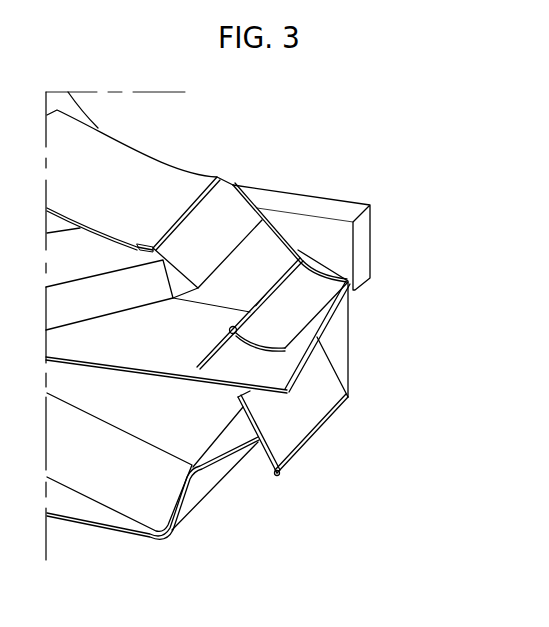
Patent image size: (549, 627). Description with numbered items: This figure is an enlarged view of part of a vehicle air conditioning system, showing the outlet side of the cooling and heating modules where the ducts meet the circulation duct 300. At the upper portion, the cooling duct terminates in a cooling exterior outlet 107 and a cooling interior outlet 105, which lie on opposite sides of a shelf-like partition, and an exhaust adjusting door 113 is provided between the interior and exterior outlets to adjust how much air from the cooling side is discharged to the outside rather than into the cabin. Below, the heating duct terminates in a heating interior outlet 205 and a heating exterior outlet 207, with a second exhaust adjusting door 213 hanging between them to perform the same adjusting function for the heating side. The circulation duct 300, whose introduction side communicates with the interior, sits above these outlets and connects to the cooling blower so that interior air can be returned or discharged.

The circulation duct 300 is at (263, 193).
The cooling exterior outlet 107 is at (275, 253).
The exhaust adjusting door 113 is at (267, 293).
The cooling interior outlet 105 is at (322, 322).
The heating interior outlet 205 is at (337, 355).
The exhaust adjusting door 213 is at (312, 413).
The heating exterior outlet 207 is at (227, 448).